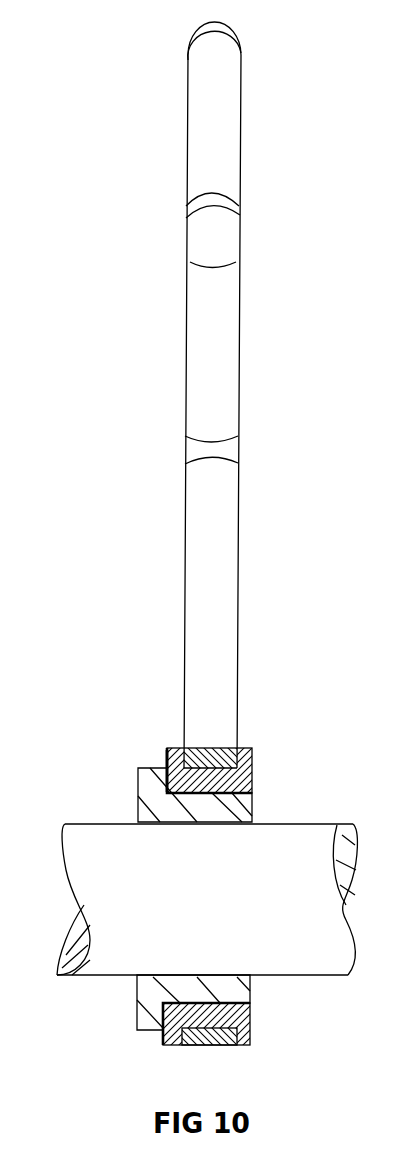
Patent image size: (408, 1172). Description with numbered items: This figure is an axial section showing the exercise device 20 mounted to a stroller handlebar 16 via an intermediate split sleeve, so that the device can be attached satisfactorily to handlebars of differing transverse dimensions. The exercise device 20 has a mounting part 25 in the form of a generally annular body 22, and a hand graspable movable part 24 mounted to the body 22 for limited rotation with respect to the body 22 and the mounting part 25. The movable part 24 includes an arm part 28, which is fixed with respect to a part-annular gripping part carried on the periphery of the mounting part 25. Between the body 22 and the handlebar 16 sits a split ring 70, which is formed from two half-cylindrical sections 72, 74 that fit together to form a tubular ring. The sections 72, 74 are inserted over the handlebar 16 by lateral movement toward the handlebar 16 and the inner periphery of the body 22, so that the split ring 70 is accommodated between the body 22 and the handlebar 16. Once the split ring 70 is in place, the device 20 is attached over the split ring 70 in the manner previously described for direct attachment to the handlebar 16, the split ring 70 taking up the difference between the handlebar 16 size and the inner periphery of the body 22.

The handlebar 16 is at (310, 928).
The exercise device 20 is at (204, 865).
The annular body 22 is at (166, 762).
The movable part 24 is at (242, 640).
The mounting part 25 is at (256, 744).
The arm part 28 is at (222, 355).
The split ring 70 is at (159, 1037).
The half-cylindrical section 72 is at (252, 806).
The half-cylindrical section 74 is at (256, 1002).